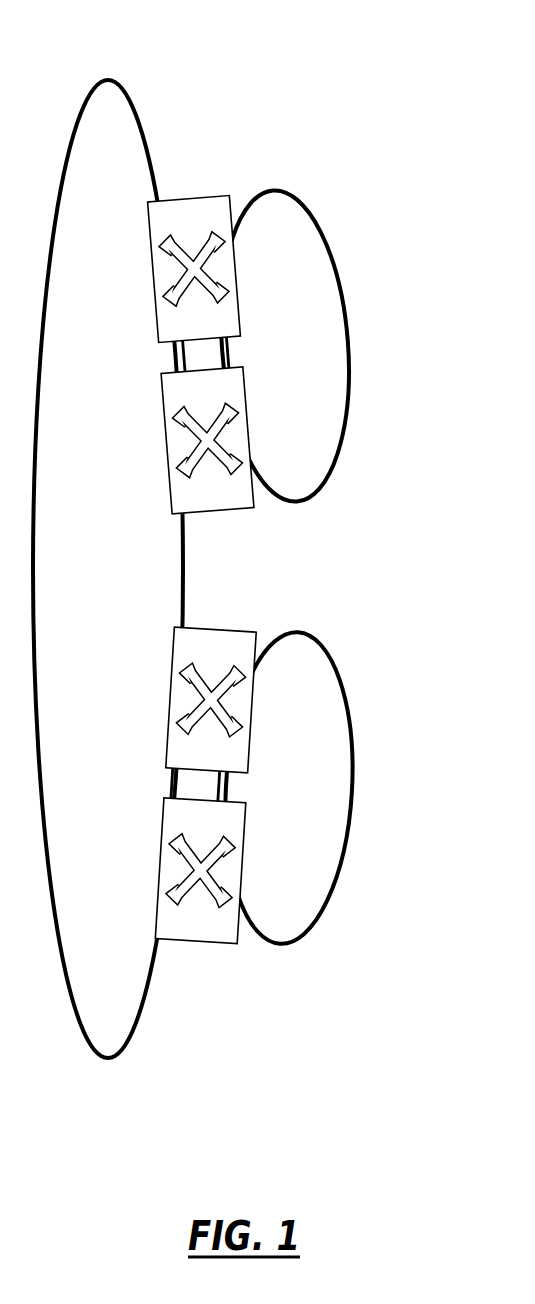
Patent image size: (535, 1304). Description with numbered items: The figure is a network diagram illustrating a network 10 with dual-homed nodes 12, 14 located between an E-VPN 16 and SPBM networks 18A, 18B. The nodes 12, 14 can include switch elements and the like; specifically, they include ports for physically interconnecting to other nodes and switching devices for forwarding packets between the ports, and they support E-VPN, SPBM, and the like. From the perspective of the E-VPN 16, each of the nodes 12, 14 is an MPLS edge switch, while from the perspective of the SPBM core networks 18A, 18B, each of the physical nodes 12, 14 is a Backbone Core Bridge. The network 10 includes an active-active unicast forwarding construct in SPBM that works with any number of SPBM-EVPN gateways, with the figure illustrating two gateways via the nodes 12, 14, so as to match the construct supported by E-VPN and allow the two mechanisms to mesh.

The network 10 is at (374, 62).
The node 12 is at (187, 198).
The node 14 is at (225, 508).
The E-VPN 16 is at (110, 79).
The SPBM network 18A is at (283, 188).
The SPBM network 18B is at (310, 633).